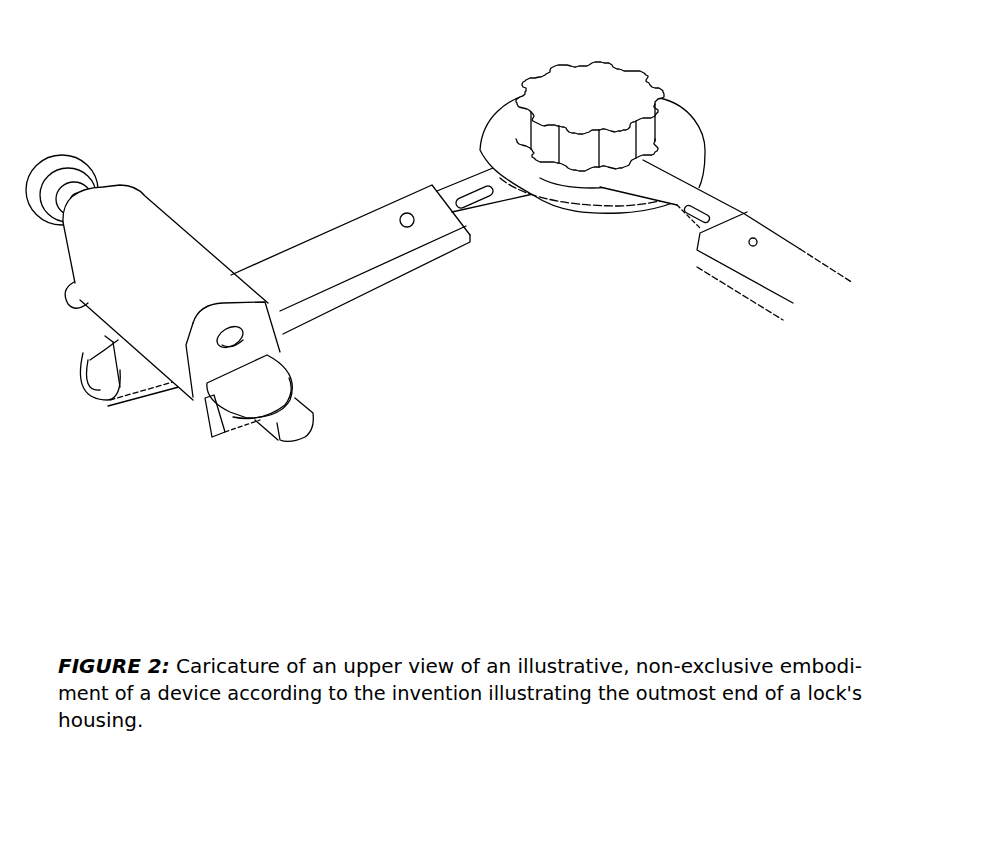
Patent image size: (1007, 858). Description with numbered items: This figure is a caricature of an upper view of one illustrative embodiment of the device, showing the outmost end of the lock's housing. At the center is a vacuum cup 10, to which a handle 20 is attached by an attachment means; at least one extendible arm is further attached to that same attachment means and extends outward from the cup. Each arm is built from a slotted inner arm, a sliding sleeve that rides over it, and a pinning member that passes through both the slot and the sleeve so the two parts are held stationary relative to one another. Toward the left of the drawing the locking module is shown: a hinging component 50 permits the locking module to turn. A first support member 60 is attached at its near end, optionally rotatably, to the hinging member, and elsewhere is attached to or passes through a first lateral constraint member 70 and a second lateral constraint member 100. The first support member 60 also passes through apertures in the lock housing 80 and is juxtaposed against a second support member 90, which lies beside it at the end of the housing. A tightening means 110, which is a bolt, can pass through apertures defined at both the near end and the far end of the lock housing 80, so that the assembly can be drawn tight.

The vacuum cup 10 is at (688, 147).
The handle 20 is at (613, 83).
The hinging component 50 is at (97, 322).
The first support member 60 is at (287, 428).
The first lateral constraint member 70 is at (108, 336).
The lock housing 80 is at (145, 223).
The second support member 90 is at (263, 383).
The second lateral constraint member 100 is at (221, 425).
The tightening means 110 is at (55, 165).